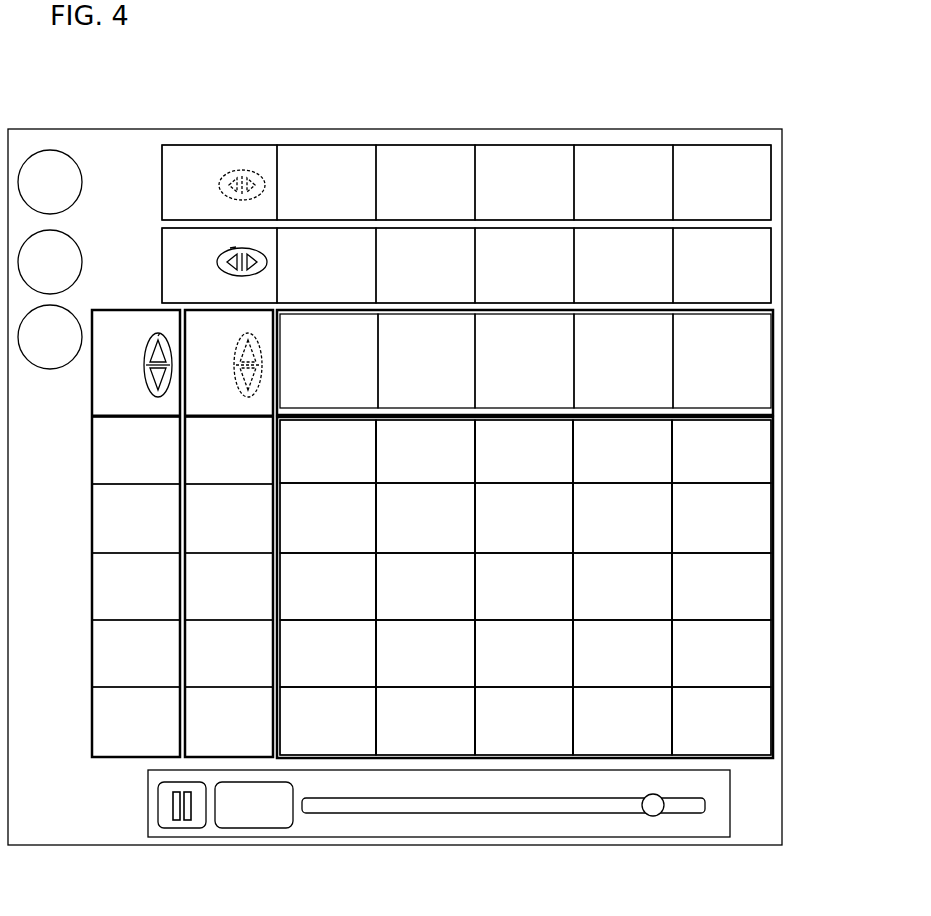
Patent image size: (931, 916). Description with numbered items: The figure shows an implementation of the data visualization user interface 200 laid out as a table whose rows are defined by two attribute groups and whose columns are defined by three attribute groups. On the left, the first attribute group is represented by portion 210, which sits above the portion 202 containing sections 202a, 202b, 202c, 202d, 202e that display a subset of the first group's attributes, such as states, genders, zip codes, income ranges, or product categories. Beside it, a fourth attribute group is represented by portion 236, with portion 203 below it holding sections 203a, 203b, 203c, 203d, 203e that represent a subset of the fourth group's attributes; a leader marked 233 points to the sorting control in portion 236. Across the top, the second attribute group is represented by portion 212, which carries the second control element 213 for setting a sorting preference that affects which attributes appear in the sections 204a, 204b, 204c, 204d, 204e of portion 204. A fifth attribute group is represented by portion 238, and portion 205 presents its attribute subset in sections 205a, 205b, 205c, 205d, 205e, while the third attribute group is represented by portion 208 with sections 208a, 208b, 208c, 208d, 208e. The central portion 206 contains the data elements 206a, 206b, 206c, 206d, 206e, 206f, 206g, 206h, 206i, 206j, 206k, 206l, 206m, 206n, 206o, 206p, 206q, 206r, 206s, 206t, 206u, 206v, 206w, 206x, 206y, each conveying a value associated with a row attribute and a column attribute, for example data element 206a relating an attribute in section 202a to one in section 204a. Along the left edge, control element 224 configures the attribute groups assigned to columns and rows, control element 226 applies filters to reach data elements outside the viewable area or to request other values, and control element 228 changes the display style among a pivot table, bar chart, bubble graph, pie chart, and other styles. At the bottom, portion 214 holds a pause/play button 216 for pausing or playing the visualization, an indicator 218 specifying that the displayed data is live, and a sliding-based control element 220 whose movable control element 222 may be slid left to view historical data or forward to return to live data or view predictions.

The data visualization user interface 200 is at (428, 88).
The portion 202 is at (185, 757).
The portion 203 is at (92, 757).
The portion 204 is at (770, 282).
The portion 205 is at (618, 143).
The portion 206 is at (742, 760).
The portion 208 is at (770, 368).
The portion 210 is at (196, 380).
The portion 212 is at (181, 271).
The second control element 213 is at (237, 247).
The portion 214 is at (387, 837).
The pause/play button 216 is at (182, 828).
The indicator 218 is at (250, 828).
The sliding-based control element 220 is at (503, 813).
The movable control element 222 is at (647, 814).
The control element 224 is at (34, 191).
The control element 226 is at (34, 271).
The control element 228 is at (34, 346).
The vertical scroll arrows 233 is at (160, 333).
The portion 236 is at (106, 380).
The portion 238 is at (181, 193).
The section 205a is at (306, 200).
The section 205b is at (405, 200).
The section 205c is at (504, 200).
The section 205d is at (603, 200).
The section 205e is at (701, 200).
The section 204a is at (306, 276).
The section 204b is at (405, 276).
The section 204c is at (504, 276).
The section 204d is at (603, 276).
The section 204e is at (701, 276).
The section 208a is at (307, 365).
The section 208b is at (417, 365).
The section 208c is at (506, 365).
The section 208d is at (601, 365).
The section 208e is at (696, 365).
The section 203a is at (114, 468).
The section 203b is at (114, 531).
The section 203c is at (114, 596).
The section 203d is at (114, 670).
The section 203e is at (114, 723).
The section 202a is at (204, 466).
The section 202b is at (204, 528).
The section 202c is at (204, 595).
The section 202d is at (204, 668).
The section 202e is at (204, 721).
The data element 206a is at (302, 468).
The data element 206b is at (302, 525).
The data element 206c is at (302, 586).
The data element 206d is at (302, 656).
The data element 206e is at (302, 721).
The data element 206f is at (401, 466).
The data element 206g is at (399, 526).
The data element 206h is at (399, 583).
The data element 206i is at (402, 653).
The data element 206j is at (402, 715).
The data element 206k is at (497, 465).
The data element 206l is at (500, 523).
The data element 206m is at (494, 580).
The data element 206n is at (497, 650).
The data element 206o is at (497, 713).
The data element 206p is at (601, 465).
The data element 206q is at (601, 523).
The data element 206r is at (603, 580).
The data element 206s is at (602, 650).
The data element 206t is at (604, 713).
The data element 206u is at (699, 465).
The data element 206v is at (699, 523).
The data element 206w is at (697, 580).
The data element 206x is at (699, 650).
The data element 206y is at (699, 713).